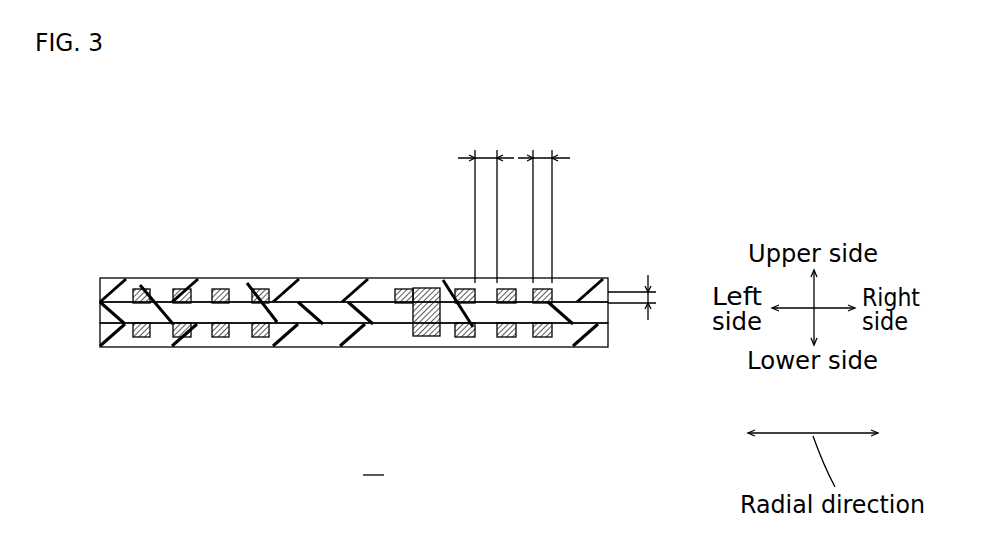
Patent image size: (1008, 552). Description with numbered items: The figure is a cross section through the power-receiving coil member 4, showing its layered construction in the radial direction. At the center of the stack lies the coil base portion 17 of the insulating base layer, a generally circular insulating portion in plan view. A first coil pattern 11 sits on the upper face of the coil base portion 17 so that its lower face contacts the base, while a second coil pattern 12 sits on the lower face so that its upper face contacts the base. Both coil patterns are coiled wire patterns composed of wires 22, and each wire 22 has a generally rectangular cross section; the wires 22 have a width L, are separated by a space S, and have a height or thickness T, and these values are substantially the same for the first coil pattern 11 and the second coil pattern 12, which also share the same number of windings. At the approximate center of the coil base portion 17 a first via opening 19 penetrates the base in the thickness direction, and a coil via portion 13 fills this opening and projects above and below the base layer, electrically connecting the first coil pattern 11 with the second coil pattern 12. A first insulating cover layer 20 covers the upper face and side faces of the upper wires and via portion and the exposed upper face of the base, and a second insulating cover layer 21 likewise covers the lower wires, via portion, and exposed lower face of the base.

The power-receiving coil member 4 is at (373, 460).
The first coil pattern 11 is at (260, 290).
The second coil pattern 12 is at (260, 337).
The coil via portion 13 is at (432, 288).
The coil base portion 17 is at (98, 312).
The first via opening 19 is at (395, 290).
The first insulating cover layer 20 is at (100, 288).
The second insulating cover layer 21 is at (97, 335).
The wires 22 is at (389, 311).
The space between the wires S is at (485, 150).
The width of the wires L is at (541, 150).
The height (thickness) of the wire T is at (650, 298).